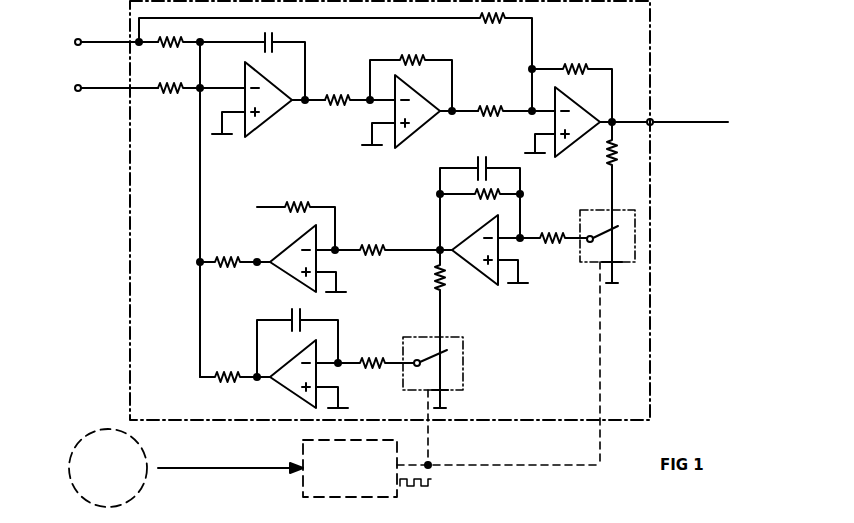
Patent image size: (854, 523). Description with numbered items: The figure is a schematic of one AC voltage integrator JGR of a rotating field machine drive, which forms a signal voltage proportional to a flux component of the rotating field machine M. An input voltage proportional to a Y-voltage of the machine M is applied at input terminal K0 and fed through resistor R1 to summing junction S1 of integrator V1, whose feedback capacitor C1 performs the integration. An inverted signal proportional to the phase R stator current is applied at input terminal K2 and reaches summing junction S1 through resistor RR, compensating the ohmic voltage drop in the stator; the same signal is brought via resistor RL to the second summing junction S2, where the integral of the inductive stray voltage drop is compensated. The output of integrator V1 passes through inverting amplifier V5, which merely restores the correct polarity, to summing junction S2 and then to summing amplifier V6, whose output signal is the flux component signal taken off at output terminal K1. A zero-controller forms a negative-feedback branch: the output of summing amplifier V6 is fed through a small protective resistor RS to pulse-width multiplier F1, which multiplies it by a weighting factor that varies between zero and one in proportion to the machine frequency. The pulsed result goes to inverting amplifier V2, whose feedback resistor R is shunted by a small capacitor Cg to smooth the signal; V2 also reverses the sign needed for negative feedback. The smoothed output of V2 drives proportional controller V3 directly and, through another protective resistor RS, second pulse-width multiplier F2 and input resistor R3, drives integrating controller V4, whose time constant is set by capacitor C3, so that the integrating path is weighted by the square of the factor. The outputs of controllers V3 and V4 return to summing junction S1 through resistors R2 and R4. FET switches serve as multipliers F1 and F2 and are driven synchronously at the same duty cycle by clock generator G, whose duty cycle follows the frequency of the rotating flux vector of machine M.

The AC voltage integrator JGR is at (130, 313).
The input terminal K2 is at (98, 36).
The input terminal K0 is at (97, 93).
The output terminal K1 is at (652, 119).
The resistor RR is at (181, 50).
The resistor R1 is at (181, 96).
The resistor R2 is at (216, 261).
The resistor R3 is at (360, 363).
The resistor R4 is at (216, 375).
The resistor RL is at (506, 28).
The protective resistor RS is at (606, 164).
The feedback resistor R is at (434, 144).
The summing junction S1 is at (201, 87).
The summing junction S2 is at (531, 114).
The capacitor C1 is at (274, 46).
The capacitor C3 is at (291, 332).
The capacitor Cg is at (488, 172).
The integrator V1 is at (268, 120).
The inverting amplifier V2 is at (468, 268).
The proportional controller V3 is at (294, 287).
The integrating controller V4 is at (294, 402).
The inverting amplifier V5 is at (416, 133).
The summing amplifier V6 is at (574, 146).
The pulse-width multiplier F1 is at (580, 262).
The pulse-width multiplier F2 is at (463, 366).
The clock generator G is at (451, 475).
The rotating field machine M is at (186, 468).